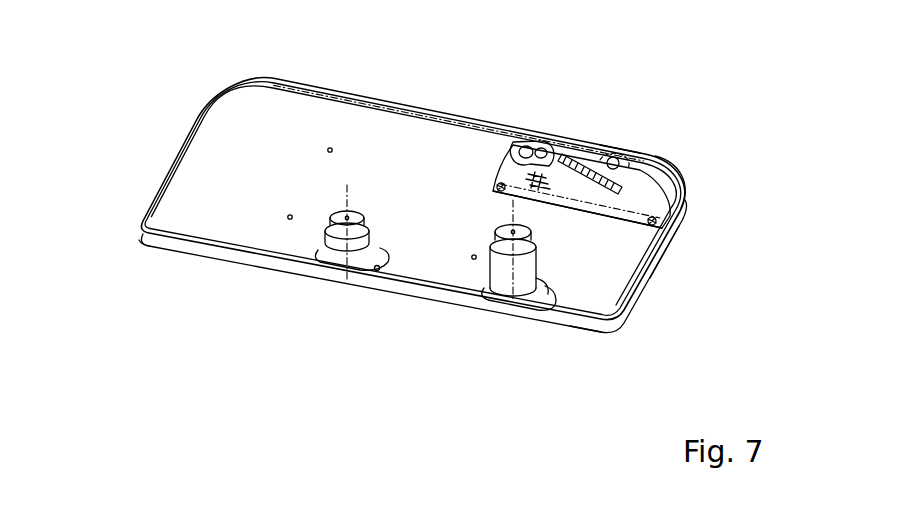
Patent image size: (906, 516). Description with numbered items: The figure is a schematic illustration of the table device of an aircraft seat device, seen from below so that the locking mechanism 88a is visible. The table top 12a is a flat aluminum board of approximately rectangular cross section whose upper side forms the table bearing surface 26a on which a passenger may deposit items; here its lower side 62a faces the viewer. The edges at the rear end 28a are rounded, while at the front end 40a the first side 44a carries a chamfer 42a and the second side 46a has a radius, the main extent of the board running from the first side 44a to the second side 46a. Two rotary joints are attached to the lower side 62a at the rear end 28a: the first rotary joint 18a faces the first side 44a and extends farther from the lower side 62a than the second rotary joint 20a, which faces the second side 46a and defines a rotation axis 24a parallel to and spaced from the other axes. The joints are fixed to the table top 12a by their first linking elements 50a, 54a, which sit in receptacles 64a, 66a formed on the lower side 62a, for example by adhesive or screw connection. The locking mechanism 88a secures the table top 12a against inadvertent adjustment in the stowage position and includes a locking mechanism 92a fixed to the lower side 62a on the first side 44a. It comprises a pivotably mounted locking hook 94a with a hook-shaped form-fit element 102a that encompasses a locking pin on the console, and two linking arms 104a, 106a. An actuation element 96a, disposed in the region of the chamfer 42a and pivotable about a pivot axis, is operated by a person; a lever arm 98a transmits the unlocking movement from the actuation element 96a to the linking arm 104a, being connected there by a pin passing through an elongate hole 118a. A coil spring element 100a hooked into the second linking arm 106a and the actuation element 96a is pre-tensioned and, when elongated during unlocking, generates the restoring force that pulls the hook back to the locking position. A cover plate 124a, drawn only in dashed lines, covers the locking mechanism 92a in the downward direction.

The table top 12a is at (192, 130).
The front end 40a is at (200, 70).
The lower side 62a is at (252, 158).
The second side 46a is at (135, 255).
The rear end 28a is at (133, 238).
The first side 44a is at (614, 342).
The chamfer 42a is at (684, 243).
The actuation element 96a is at (676, 190).
The spring element 100a is at (640, 153).
The first linking element 54a is at (335, 255).
The receptacle 66a is at (335, 270).
The second rotary joint 20a is at (377, 272).
The rotation axis 24a is at (343, 197).
The first linking element 50a is at (503, 280).
The receptacle 64a is at (503, 308).
The first rotary joint 18a is at (545, 297).
The table bearing surface 26a is at (503, 213).
The locking mechanism 88a is at (593, 130).
The form-fit element 102a is at (540, 137).
The linking arm 104a is at (510, 160).
The locking hook 94a is at (550, 137).
The linking arm 106a is at (560, 137).
The lever arm 98a is at (617, 152).
The locking mechanism 92a is at (622, 268).
The elongate hole 118a is at (570, 215).
The cover plate 124a is at (493, 180).